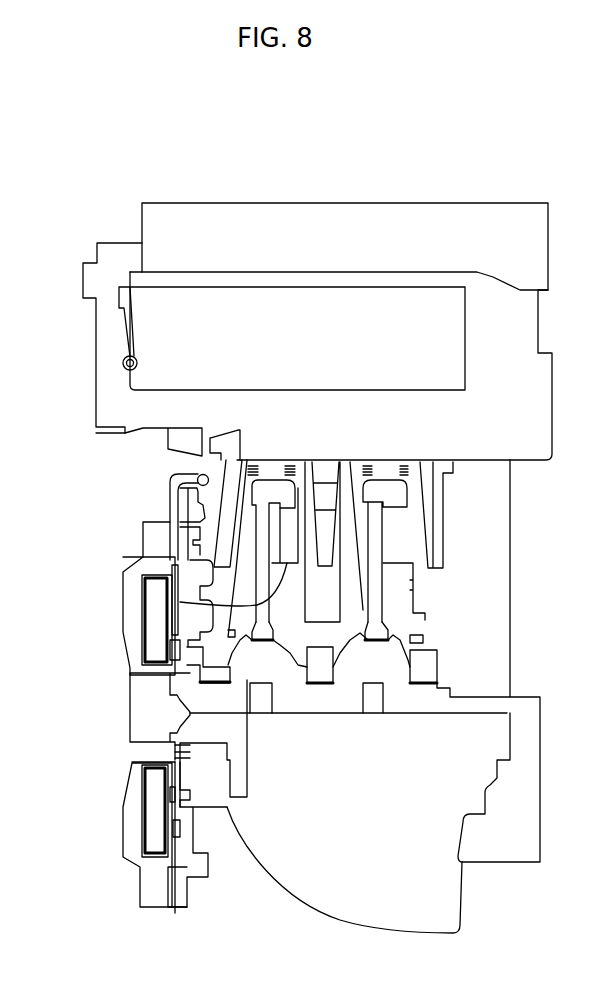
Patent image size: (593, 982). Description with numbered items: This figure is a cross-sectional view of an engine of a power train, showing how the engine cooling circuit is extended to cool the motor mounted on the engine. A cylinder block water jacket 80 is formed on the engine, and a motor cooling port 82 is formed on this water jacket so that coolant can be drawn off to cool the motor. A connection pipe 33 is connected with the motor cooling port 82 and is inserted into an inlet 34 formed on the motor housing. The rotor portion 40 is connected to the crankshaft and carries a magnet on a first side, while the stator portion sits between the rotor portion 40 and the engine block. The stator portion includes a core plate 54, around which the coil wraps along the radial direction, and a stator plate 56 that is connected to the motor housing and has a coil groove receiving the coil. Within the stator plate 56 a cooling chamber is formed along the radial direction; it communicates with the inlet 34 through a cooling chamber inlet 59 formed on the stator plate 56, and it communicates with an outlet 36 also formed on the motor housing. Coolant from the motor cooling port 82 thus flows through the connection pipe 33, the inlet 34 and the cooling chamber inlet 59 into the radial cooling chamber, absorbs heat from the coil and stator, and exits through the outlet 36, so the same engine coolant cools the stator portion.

The connection pipe 33 is at (172, 474).
The inlet 34 is at (175, 543).
The outlet 36 is at (177, 827).
The rotor portion 40 is at (148, 715).
The core plate 54 is at (153, 847).
The stator plate 56 is at (173, 650).
The cooling chamber inlet 59 is at (147, 557).
The cylinder block water jacket 80 is at (180, 602).
The motor cooling port 82 is at (217, 480).